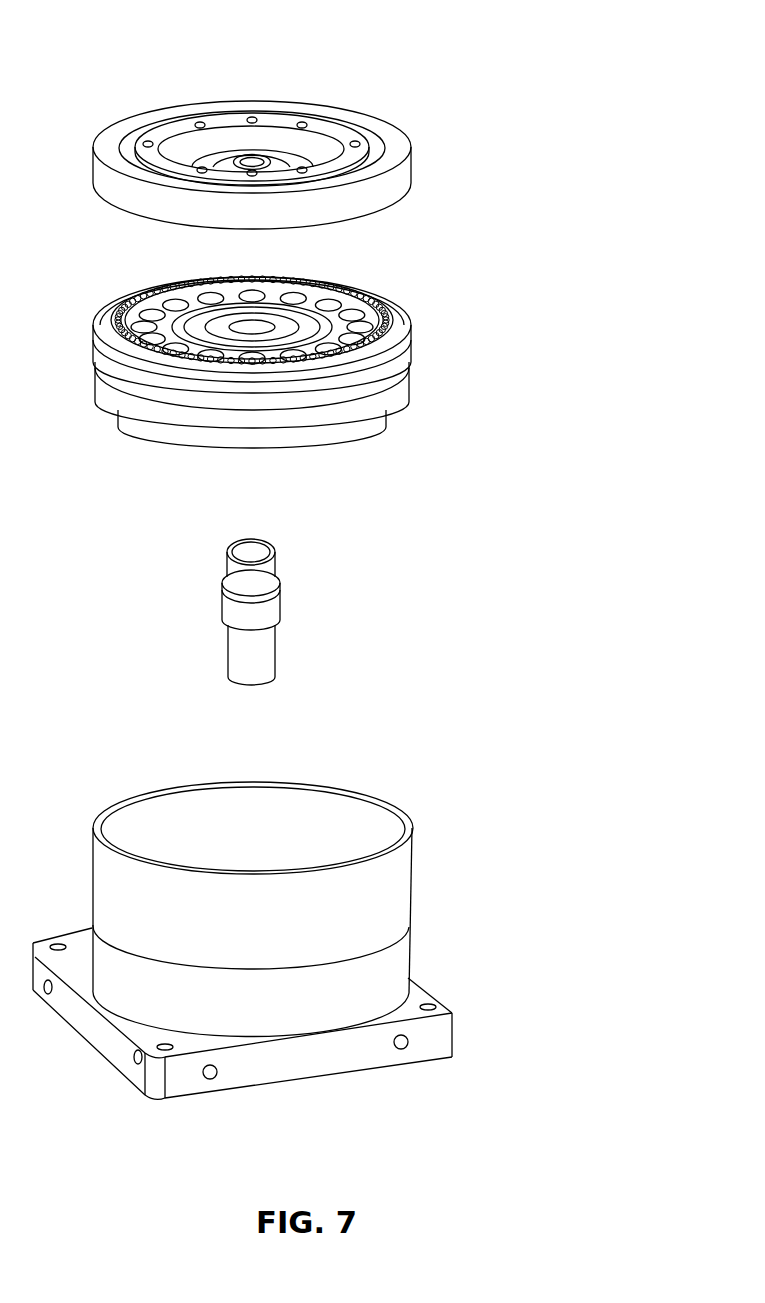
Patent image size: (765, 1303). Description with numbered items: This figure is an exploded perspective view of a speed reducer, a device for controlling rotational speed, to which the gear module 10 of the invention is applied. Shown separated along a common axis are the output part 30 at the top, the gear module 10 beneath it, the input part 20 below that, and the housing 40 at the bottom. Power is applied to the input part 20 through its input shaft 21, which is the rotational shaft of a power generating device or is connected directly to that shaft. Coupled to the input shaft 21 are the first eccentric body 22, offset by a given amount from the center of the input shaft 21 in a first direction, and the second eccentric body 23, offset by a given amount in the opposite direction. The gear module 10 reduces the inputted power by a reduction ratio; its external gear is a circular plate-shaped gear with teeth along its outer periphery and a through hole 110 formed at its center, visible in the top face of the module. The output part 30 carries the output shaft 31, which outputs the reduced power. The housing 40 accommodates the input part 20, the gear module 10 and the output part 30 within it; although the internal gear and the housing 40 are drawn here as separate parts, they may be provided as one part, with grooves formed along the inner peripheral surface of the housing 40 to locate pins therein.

The gear module 10 is at (411, 375).
The through hole 110 is at (256, 322).
The input part 20 is at (237, 611).
The input shaft 21 is at (228, 644).
The first eccentric body 22 is at (227, 556).
The second eccentric body 23 is at (222, 598).
The output part 30 is at (411, 165).
The output shaft 31 is at (266, 152).
The housing 40 is at (412, 873).